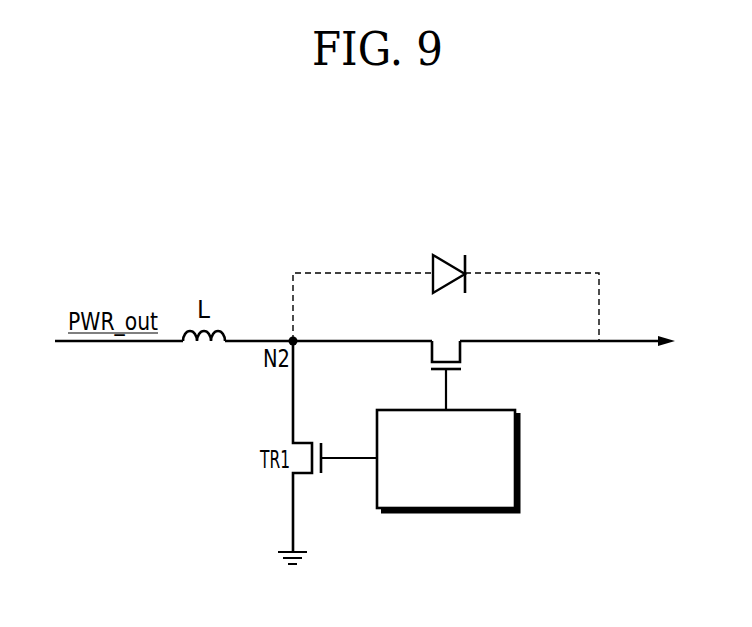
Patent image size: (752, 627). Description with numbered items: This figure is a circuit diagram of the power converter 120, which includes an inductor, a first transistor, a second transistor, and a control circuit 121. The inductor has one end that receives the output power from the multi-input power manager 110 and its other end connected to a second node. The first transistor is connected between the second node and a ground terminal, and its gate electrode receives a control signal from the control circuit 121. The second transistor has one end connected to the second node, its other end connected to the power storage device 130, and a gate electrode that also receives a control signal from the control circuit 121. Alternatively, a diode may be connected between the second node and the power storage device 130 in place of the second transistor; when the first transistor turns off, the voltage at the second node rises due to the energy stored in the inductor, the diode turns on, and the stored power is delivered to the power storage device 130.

The multi-input power manager 110 is at (45, 353).
The power converter 120 is at (626, 203).
The control circuit 121 is at (519, 456).
The power storage device 130 is at (722, 354).